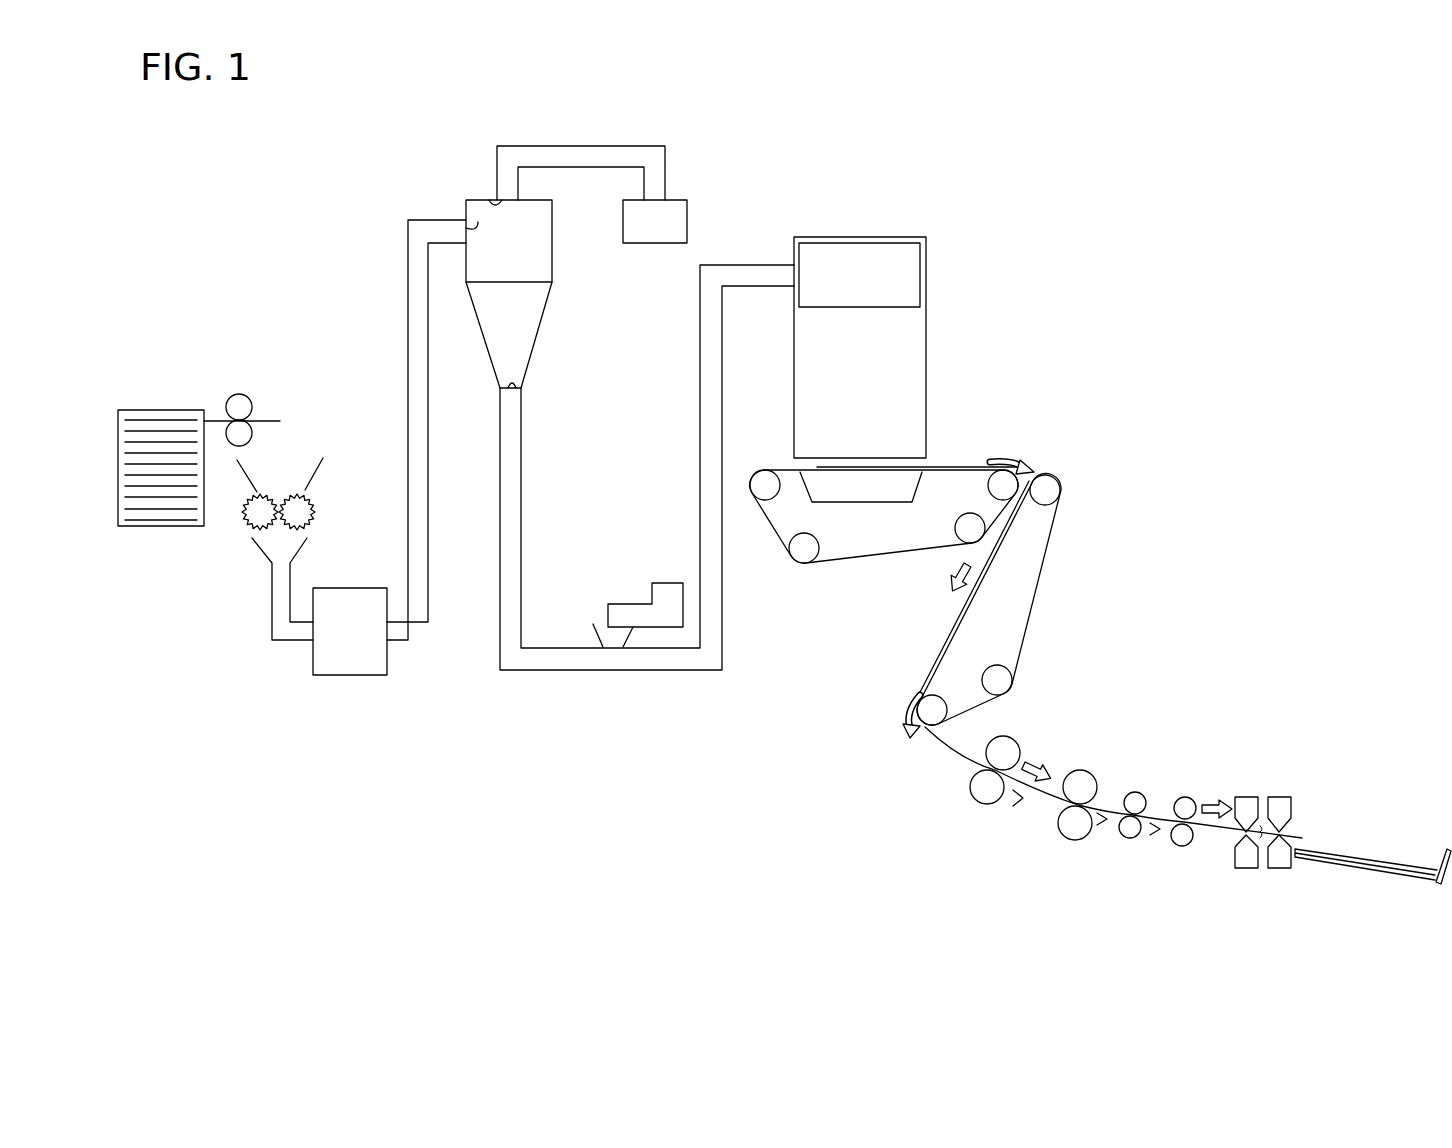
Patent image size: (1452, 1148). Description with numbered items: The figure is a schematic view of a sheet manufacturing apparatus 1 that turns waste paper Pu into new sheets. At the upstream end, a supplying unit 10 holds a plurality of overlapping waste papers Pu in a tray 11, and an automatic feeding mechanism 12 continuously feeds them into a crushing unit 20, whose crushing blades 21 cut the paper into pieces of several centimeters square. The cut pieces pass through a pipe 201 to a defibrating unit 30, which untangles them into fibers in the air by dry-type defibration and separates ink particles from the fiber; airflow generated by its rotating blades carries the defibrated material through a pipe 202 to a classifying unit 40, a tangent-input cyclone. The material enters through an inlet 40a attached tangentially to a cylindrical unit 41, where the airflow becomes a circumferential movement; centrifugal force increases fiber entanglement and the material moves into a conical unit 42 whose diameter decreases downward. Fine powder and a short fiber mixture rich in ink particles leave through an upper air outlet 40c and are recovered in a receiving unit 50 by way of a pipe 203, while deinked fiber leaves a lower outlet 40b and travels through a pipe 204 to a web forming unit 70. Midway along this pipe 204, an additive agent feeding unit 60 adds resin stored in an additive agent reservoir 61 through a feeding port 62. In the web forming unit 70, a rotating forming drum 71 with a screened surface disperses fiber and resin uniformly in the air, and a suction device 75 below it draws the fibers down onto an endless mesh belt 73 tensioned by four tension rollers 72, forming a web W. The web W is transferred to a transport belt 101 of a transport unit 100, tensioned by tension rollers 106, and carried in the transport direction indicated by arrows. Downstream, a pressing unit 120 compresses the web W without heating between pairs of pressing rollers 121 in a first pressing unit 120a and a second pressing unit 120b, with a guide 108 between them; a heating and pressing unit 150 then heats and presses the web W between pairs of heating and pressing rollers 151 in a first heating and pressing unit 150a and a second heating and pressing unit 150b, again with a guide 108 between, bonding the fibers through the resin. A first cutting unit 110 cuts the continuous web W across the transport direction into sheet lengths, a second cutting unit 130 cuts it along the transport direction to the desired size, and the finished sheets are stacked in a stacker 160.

The sheet manufacturing apparatus 1 is at (808, 122).
The supplying unit 10 is at (167, 402).
The tray 11 is at (140, 527).
The automatic feeding mechanism 12 is at (220, 398).
The crushing unit 20 is at (327, 473).
The crushing blades 21 is at (313, 512).
The defibrating unit 30 is at (348, 578).
The classifying unit (cyclone) 40 is at (516, 269).
The inlet 40a is at (478, 225).
The lower outlet 40b is at (512, 382).
The upper air outlet 40c is at (495, 205).
The cylindrical unit 41 is at (542, 247).
The conical unit 42 is at (527, 328).
The receiving unit 50 is at (697, 188).
The additive agent feeding unit 60 is at (613, 585).
The additive agent reservoir 61 is at (668, 594).
The feeding port 62 is at (593, 633).
The web forming unit 70 is at (893, 315).
The forming drum 71 is at (895, 253).
The tension rollers 72 is at (758, 469).
The mesh belt 73 is at (828, 565).
The suction device 75 is at (822, 492).
The transport unit 100 is at (1042, 450).
The transport belt 101 is at (1052, 553).
The tension rollers 106 is at (1062, 490).
The guide 108 is at (1037, 800).
The first cutting unit 110 is at (1248, 877).
The pressing unit 120 is at (1067, 745).
The first pressing unit 120a is at (1042, 763).
The second pressing unit 120b is at (1102, 737).
The pressing rollers 121 is at (1022, 743).
The second cutting unit 130 is at (1283, 877).
The heating and pressing unit 150 is at (1227, 775).
The first heating and pressing unit 150a is at (1191, 798).
The second heating and pressing unit 150b is at (1308, 703).
The heating and pressing rollers 151 is at (1142, 800).
The stacker 160 is at (1393, 887).
The pipe 201 is at (270, 610).
The pipe 202 is at (407, 270).
The pipe 203 is at (592, 146).
The pipe 204 is at (523, 486).
The web W is at (952, 465).
The waste paper Pu is at (268, 420).